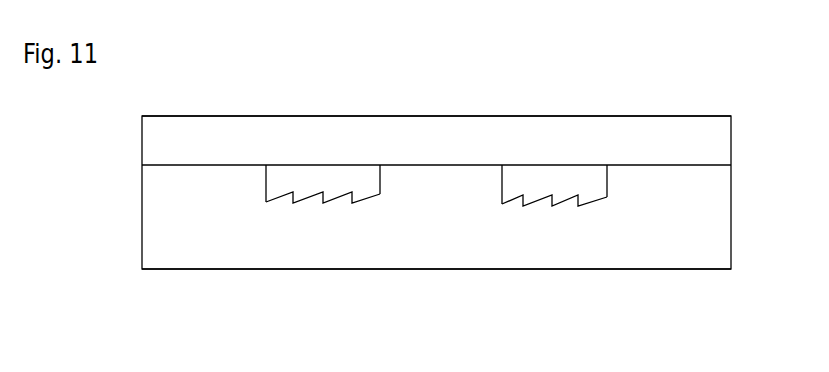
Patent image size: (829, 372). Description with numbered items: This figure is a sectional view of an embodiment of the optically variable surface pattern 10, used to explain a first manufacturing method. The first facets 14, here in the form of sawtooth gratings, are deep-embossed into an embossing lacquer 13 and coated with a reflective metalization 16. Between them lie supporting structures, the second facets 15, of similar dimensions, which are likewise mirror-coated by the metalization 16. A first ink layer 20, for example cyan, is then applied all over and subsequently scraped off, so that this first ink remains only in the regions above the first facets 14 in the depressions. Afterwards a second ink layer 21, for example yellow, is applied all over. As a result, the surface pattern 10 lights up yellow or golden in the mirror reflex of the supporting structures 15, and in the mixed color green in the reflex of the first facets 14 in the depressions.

The optically variable surface pattern 10 is at (669, 96).
The embossing lacquer 13 is at (715, 238).
The first facets 14 is at (273, 203).
The second facets 15 is at (193, 165).
The reflective metalization 16 is at (218, 165).
The first ink layer 20 is at (332, 186).
The second ink layer 21 is at (170, 130).